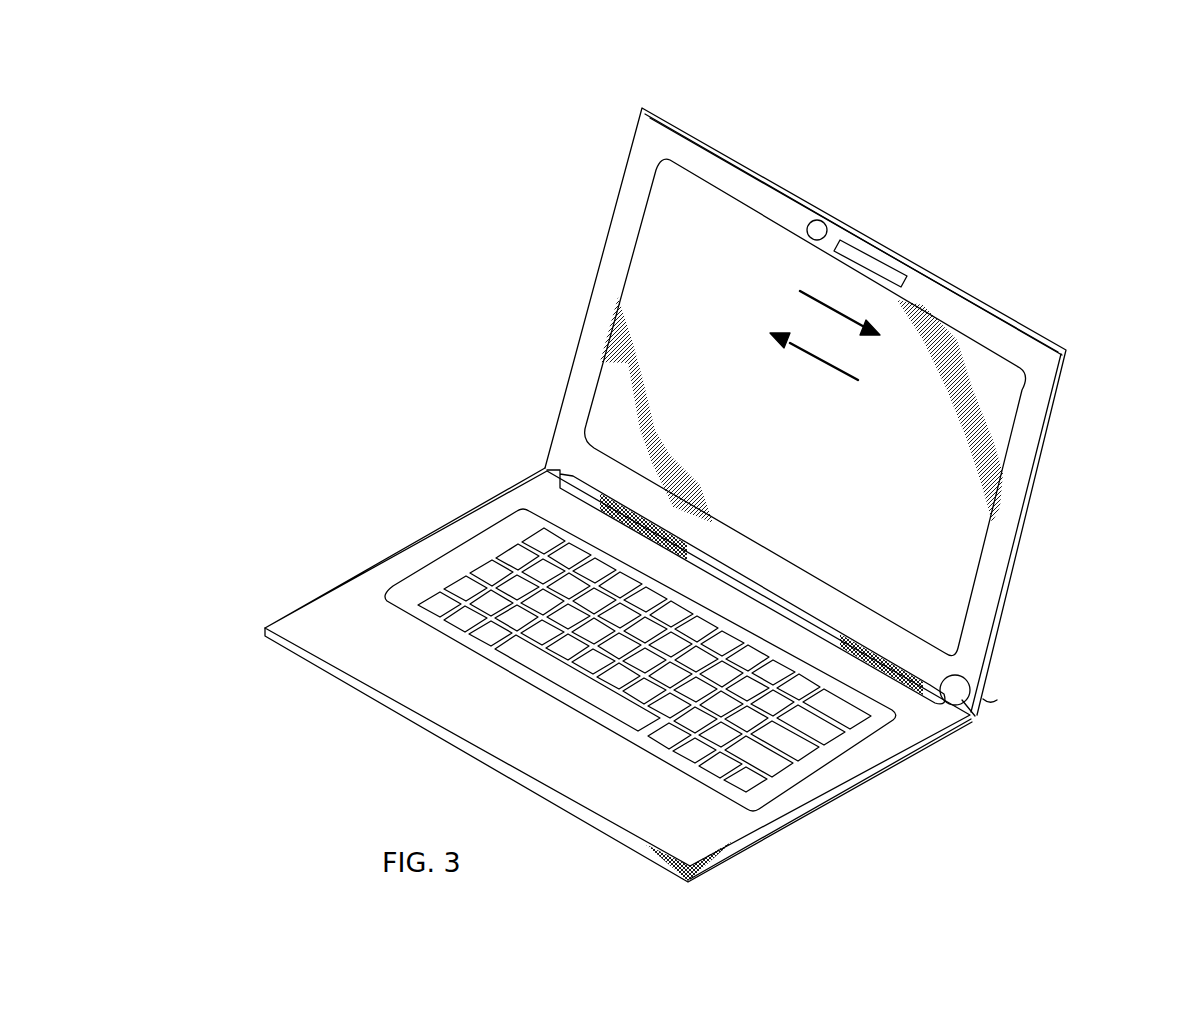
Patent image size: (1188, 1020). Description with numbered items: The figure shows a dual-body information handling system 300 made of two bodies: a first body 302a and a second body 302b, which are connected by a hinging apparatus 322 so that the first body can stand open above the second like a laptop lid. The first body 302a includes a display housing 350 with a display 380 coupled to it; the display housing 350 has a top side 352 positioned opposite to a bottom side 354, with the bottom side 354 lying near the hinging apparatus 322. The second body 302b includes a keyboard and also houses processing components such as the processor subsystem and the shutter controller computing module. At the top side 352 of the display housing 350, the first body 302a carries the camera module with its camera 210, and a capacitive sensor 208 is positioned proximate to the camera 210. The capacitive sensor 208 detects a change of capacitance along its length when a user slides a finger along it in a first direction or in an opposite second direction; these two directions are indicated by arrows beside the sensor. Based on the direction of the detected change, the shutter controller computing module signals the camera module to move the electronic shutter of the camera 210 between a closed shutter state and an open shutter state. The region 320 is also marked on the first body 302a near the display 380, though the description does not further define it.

The dual-body information handling system 300 is at (960, 172).
The display housing 350 is at (607, 265).
The top side 352 is at (680, 105).
The bottom side 354 is at (535, 432).
The first body 302a is at (1012, 536).
The second body 302b is at (406, 554).
The display bezel 320 is at (968, 347).
The display 380 is at (995, 411).
The camera 210 is at (818, 215).
The capacitive sensor 208 is at (880, 257).
The hinging apparatus 322 is at (1011, 709).